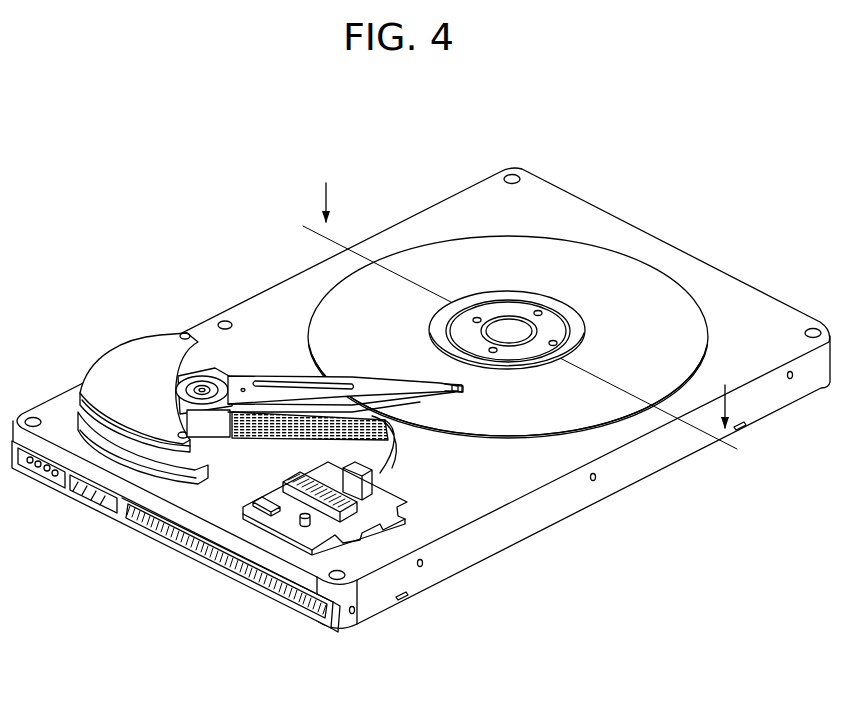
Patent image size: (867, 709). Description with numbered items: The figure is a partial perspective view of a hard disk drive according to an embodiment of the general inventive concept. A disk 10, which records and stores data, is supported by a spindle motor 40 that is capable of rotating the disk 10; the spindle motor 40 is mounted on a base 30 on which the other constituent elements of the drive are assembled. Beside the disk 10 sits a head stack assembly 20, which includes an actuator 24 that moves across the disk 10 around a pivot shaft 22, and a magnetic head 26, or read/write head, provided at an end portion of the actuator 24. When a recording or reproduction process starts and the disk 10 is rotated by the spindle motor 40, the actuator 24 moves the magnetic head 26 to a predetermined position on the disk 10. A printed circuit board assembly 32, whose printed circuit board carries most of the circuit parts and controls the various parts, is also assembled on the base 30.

The disk 10 is at (638, 293).
The head stack assembly 20 is at (319, 349).
The pivot shaft 22 is at (176, 333).
The actuator 24 is at (290, 377).
The magnetic head 26 is at (480, 393).
The base 30 is at (753, 306).
The printed circuit board assembly 32 is at (112, 515).
The spindle motor 40 is at (554, 286).